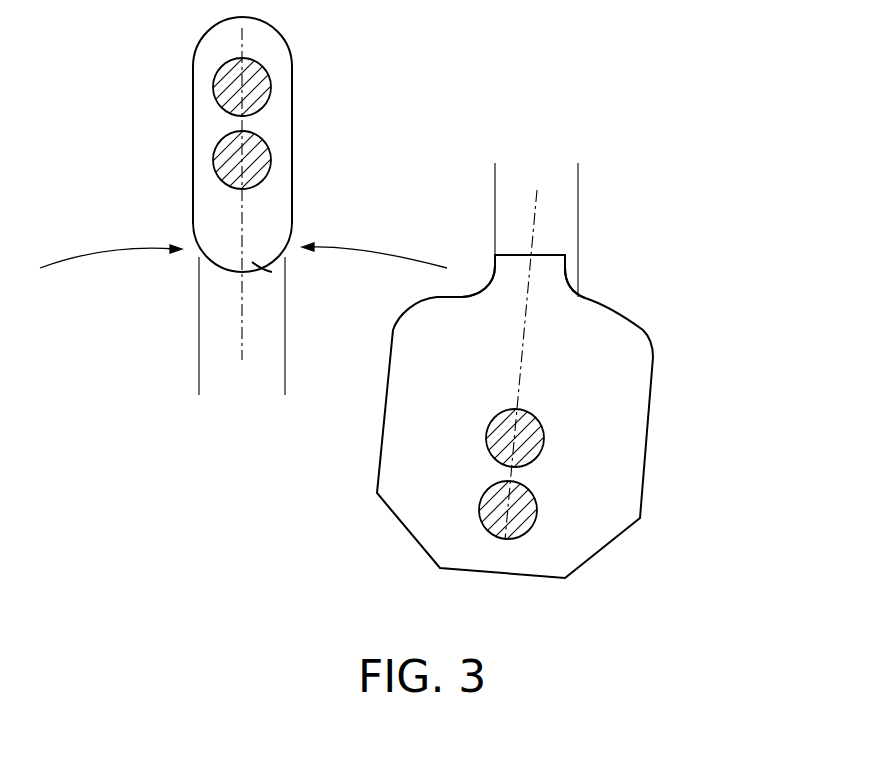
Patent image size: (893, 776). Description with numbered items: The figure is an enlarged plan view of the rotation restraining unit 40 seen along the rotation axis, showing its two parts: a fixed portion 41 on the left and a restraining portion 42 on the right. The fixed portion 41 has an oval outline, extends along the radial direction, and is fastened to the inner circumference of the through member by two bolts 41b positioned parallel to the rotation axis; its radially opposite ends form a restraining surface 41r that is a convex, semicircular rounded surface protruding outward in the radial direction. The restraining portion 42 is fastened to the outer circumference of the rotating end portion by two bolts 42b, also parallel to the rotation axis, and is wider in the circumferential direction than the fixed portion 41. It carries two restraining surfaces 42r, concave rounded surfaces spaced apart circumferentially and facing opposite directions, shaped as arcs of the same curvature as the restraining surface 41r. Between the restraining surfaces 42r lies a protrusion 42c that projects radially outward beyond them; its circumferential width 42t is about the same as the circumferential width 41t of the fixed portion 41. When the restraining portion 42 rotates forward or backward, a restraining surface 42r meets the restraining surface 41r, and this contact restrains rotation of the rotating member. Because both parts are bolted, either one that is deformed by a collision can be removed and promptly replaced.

The rotation restraining unit 40 is at (410, 304).
The fixed portion 41 is at (252, 223).
The bolts 41b is at (222, 155).
The restraining surface 41r is at (258, 268).
The circumferential width 41t is at (285, 384).
The restraining portion 42 is at (556, 363).
The bolts 42b is at (487, 527).
The protrusion 42c is at (542, 268).
The restraining surfaces 42r is at (462, 295).
The circumferential width 42t is at (578, 175).